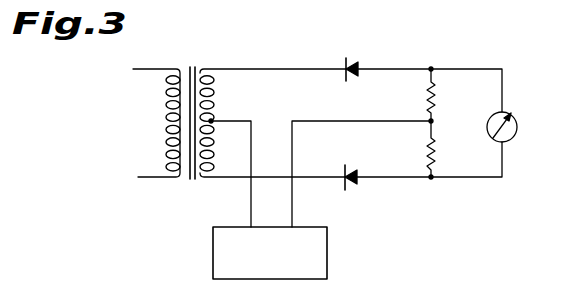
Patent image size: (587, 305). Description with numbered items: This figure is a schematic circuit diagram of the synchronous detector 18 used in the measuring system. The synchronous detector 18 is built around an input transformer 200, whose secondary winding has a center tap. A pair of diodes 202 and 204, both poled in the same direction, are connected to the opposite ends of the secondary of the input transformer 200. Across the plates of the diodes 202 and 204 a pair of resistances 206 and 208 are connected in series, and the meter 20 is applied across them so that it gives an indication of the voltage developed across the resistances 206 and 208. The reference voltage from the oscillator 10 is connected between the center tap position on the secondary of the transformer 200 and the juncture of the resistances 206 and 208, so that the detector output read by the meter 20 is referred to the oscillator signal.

The input transformer 200 is at (191, 66).
The diode 202 is at (351, 66).
The diode 204 is at (353, 183).
The resistance 206 is at (432, 106).
The resistance 208 is at (462, 152).
The synchronous detector 18 is at (419, 57).
The meter 20 is at (512, 118).
The oscillator 10 is at (333, 212).